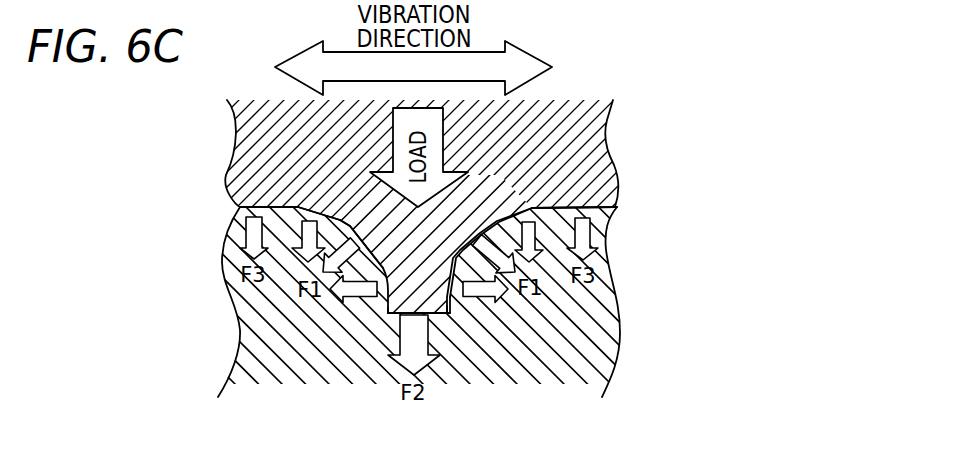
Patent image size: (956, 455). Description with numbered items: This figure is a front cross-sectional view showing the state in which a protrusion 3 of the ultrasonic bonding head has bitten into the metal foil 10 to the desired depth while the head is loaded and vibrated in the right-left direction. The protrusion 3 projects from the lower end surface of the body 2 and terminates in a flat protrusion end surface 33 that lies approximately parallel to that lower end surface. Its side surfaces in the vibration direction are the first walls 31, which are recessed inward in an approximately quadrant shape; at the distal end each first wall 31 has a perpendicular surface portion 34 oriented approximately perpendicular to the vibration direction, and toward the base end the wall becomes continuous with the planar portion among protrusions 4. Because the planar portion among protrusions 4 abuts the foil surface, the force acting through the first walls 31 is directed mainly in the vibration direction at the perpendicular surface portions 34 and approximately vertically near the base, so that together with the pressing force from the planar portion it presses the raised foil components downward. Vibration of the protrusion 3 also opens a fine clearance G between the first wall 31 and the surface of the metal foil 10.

The body 2 is at (577, 118).
The protrusion 3 is at (387, 296).
The planar portion among protrusions 4 is at (607, 208).
The metal foil 10 is at (253, 318).
The first wall 31 is at (457, 252).
The protrusion end surface 33 is at (447, 316).
The perpendicular surface portion 34 is at (385, 318).
The fine clearance G is at (450, 315).